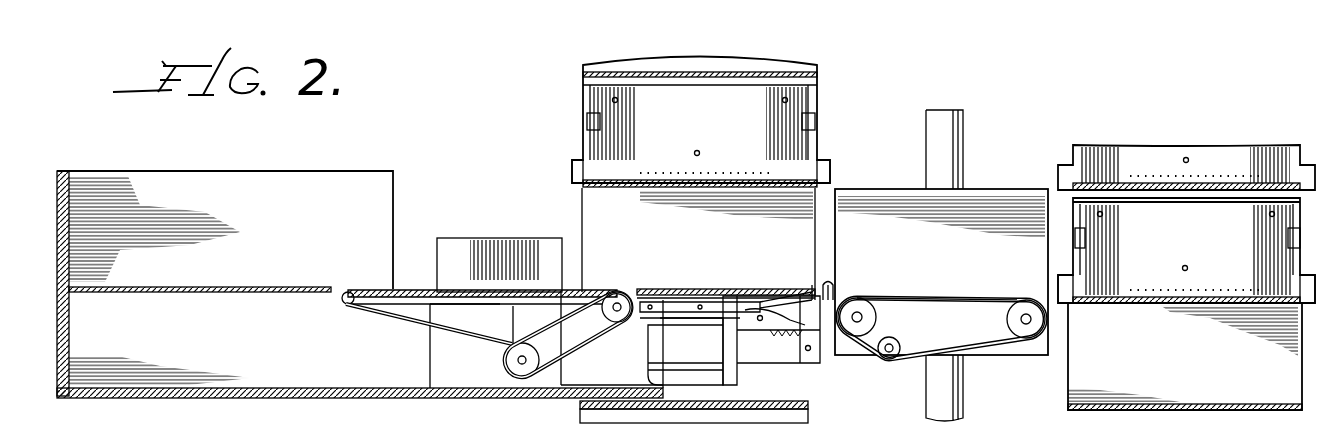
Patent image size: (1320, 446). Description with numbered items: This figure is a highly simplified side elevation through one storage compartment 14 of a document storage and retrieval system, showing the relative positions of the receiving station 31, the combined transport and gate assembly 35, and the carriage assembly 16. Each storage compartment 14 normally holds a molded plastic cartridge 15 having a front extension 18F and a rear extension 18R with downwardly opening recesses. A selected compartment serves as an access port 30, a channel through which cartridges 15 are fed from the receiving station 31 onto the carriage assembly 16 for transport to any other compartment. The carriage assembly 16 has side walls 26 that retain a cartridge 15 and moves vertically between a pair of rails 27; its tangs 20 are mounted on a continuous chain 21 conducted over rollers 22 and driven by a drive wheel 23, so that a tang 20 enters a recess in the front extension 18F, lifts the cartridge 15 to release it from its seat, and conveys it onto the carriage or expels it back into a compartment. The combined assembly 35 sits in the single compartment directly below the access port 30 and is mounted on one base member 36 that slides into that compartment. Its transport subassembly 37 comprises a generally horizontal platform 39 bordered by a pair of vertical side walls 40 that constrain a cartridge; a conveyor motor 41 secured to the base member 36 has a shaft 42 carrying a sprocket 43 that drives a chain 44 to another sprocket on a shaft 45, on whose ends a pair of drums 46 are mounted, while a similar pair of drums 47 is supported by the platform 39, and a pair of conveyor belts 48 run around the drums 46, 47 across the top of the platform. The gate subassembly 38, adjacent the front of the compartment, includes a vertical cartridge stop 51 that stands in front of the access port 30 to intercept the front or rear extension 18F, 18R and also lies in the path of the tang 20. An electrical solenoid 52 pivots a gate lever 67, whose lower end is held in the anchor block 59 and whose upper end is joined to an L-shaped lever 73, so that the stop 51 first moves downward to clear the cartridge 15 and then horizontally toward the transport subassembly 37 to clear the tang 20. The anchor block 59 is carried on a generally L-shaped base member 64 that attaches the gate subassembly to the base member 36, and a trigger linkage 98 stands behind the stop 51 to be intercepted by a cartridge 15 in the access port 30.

The storage compartment 14 is at (1184, 396).
The cartridge 15 is at (808, 104).
The carriage assembly 16 is at (942, 242).
The front extension 18F is at (820, 172).
The rear extension 18R is at (578, 170).
The tang 20 is at (843, 340).
The continuous chain 21 is at (943, 298).
The rollers 22 is at (860, 312).
The drive wheel 23 is at (895, 343).
The side walls 26 is at (890, 207).
The rails 27 is at (963, 130).
The access port 30 is at (595, 203).
The receiving station 31 is at (360, 183).
The combined transport and gate assembly 35 is at (495, 401).
The base member 36 is at (572, 386).
The transport subassembly 37 is at (428, 346).
The gate subassembly 38 is at (745, 280).
The platform 39 is at (368, 292).
The side walls 40 is at (457, 250).
The conveyor motor 41 is at (550, 352).
The shaft 42 is at (518, 362).
The sprocket 43 is at (510, 356).
The chain 44 is at (578, 330).
The shaft 45 is at (622, 303).
The drums 46 is at (614, 300).
The drums 47 is at (343, 303).
The conveyor belts 48 is at (397, 311).
The cartridge stop 51 is at (838, 298).
The electrical solenoid 52 is at (695, 390).
The anchor block 59 is at (790, 360).
The base member 64 is at (752, 380).
The gate lever 67 is at (722, 338).
The L-shaped lever 73 is at (773, 302).
The trigger linkage 98 is at (803, 292).